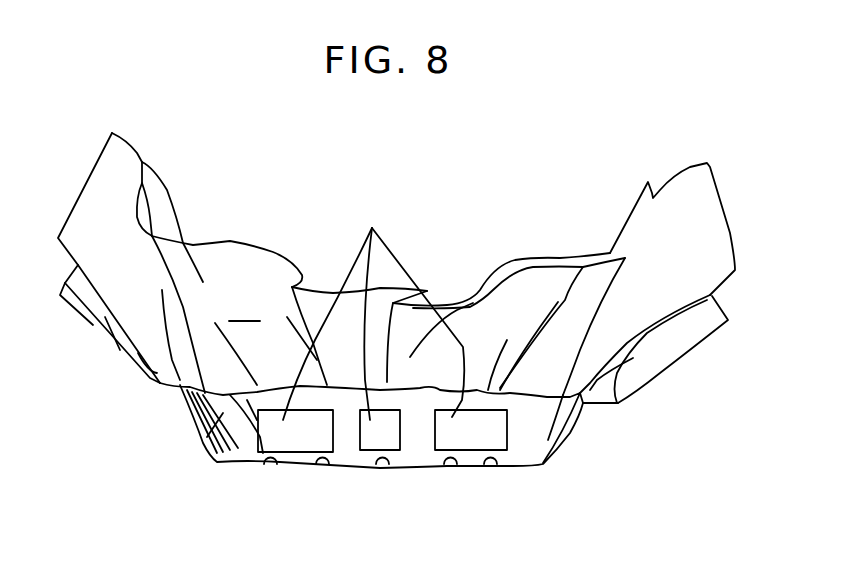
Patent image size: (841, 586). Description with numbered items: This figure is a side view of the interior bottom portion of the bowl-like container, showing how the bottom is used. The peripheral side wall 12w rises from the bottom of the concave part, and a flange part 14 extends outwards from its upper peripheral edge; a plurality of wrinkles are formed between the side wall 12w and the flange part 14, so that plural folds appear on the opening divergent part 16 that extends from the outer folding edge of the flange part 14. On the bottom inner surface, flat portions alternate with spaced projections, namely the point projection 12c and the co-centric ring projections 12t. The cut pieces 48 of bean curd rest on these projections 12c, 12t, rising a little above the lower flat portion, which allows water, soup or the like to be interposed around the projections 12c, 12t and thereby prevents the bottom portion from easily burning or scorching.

The peripheral side wall 12w is at (208, 460).
The co-centric ring projection 12t is at (269, 463).
The point projection 12c is at (382, 467).
The flange part 14 is at (160, 387).
The opening divergent part 16 is at (443, 283).
The cut pieces of bean curd 48 is at (373, 307).